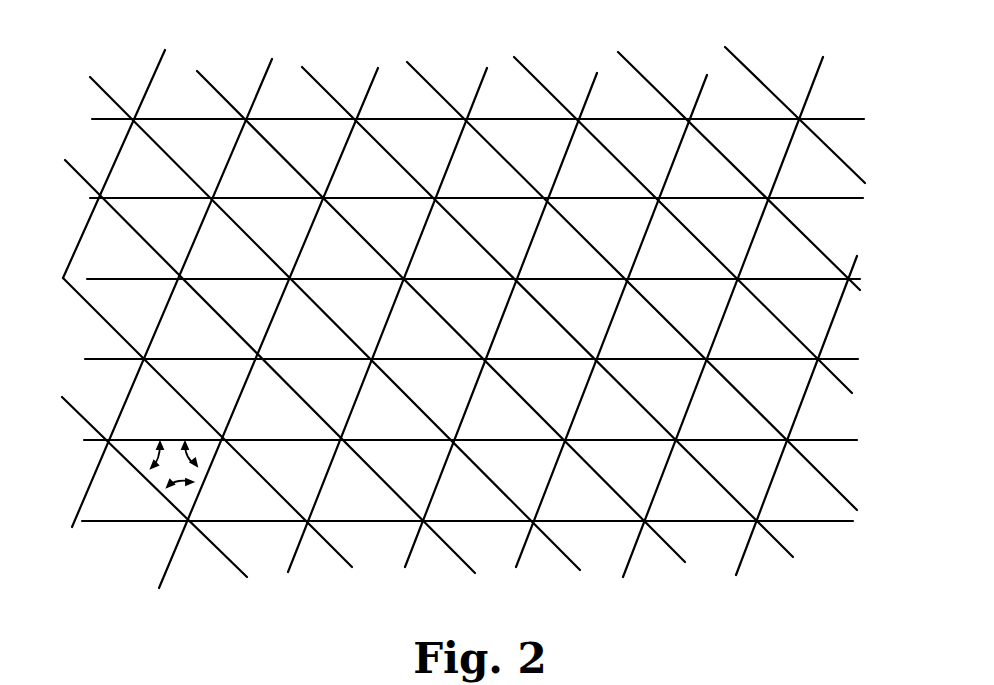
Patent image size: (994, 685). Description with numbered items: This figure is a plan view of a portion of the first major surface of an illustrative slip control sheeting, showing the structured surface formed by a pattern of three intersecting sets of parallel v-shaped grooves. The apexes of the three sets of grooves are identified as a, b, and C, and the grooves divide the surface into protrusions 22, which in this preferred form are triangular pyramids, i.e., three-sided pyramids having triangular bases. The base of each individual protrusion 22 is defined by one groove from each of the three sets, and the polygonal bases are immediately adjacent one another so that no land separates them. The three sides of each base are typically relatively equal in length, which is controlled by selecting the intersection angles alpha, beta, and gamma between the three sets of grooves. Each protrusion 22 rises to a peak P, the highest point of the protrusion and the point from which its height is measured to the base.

The protrusions 22 is at (697, 157).
The peak P is at (393, 132).
The apex of third set of grooves C is at (827, 280).
The apex of first set of grooves a is at (457, 558).
The apex of second set of grooves b is at (738, 562).
The intersection angle alpha is at (180, 485).
The intersection angle beta is at (151, 466).
The intersection angle gamma is at (197, 466).